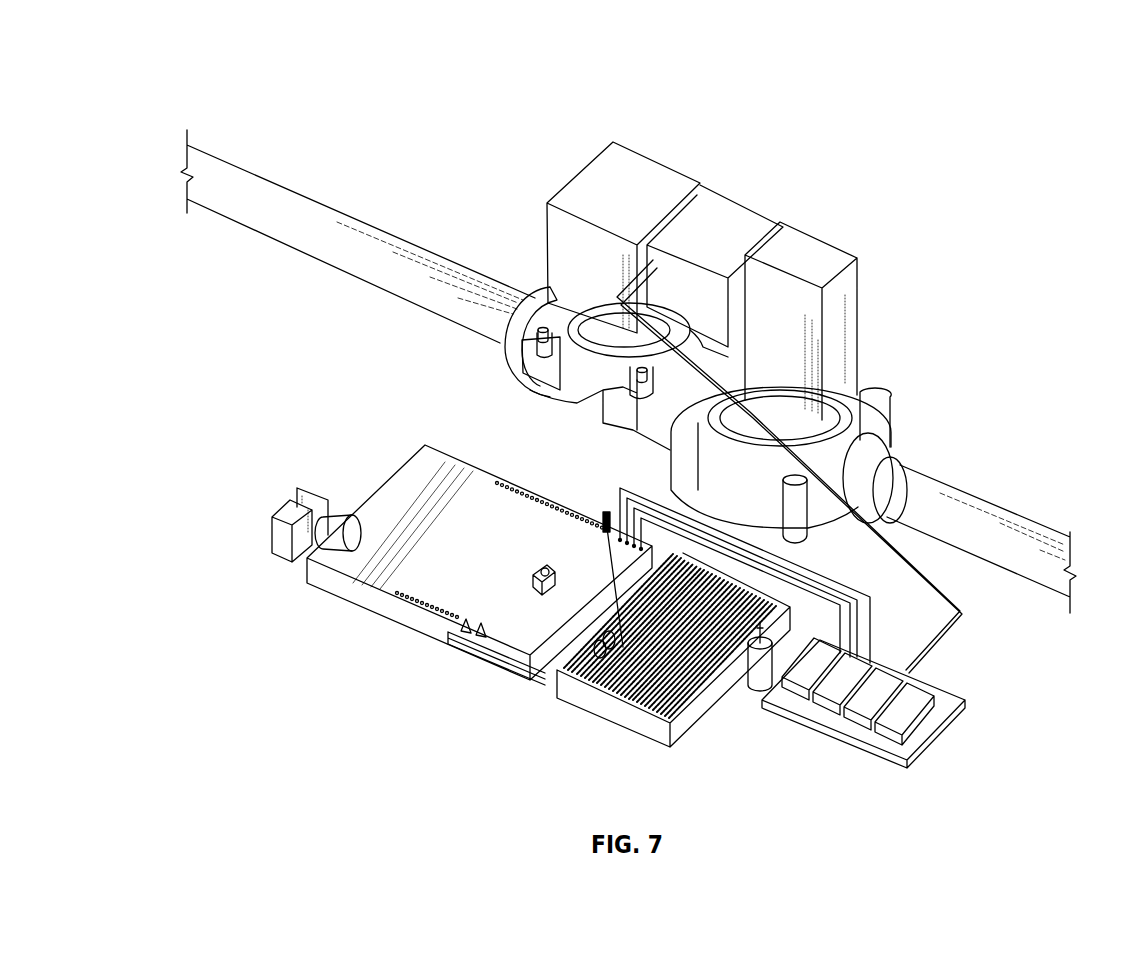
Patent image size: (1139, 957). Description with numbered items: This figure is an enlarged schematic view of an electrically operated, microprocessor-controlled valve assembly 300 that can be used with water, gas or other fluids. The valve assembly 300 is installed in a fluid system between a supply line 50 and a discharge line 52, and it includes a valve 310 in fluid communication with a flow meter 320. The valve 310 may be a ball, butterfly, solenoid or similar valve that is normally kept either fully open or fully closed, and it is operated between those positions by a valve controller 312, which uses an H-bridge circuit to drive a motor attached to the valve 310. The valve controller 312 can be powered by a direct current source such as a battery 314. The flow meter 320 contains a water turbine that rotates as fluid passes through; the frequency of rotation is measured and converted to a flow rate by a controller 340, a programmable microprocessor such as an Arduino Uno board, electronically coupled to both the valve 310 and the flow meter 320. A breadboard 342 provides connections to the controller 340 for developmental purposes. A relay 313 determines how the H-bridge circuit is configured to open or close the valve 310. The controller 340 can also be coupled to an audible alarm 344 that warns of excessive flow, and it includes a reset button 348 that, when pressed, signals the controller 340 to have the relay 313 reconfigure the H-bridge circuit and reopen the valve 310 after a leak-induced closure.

The valve assembly 300 is at (1050, 114).
The discharge line 52 is at (254, 224).
The valve controller 312 is at (705, 208).
The valve 310 is at (522, 371).
The flow meter 320 is at (675, 455).
The supply line 50 is at (926, 492).
The controller 340 is at (398, 480).
The battery 314 is at (278, 505).
The reset button 348 is at (530, 566).
The audible alarm 344 is at (596, 640).
The breadboard 342 is at (653, 745).
The relay 313 is at (828, 725).